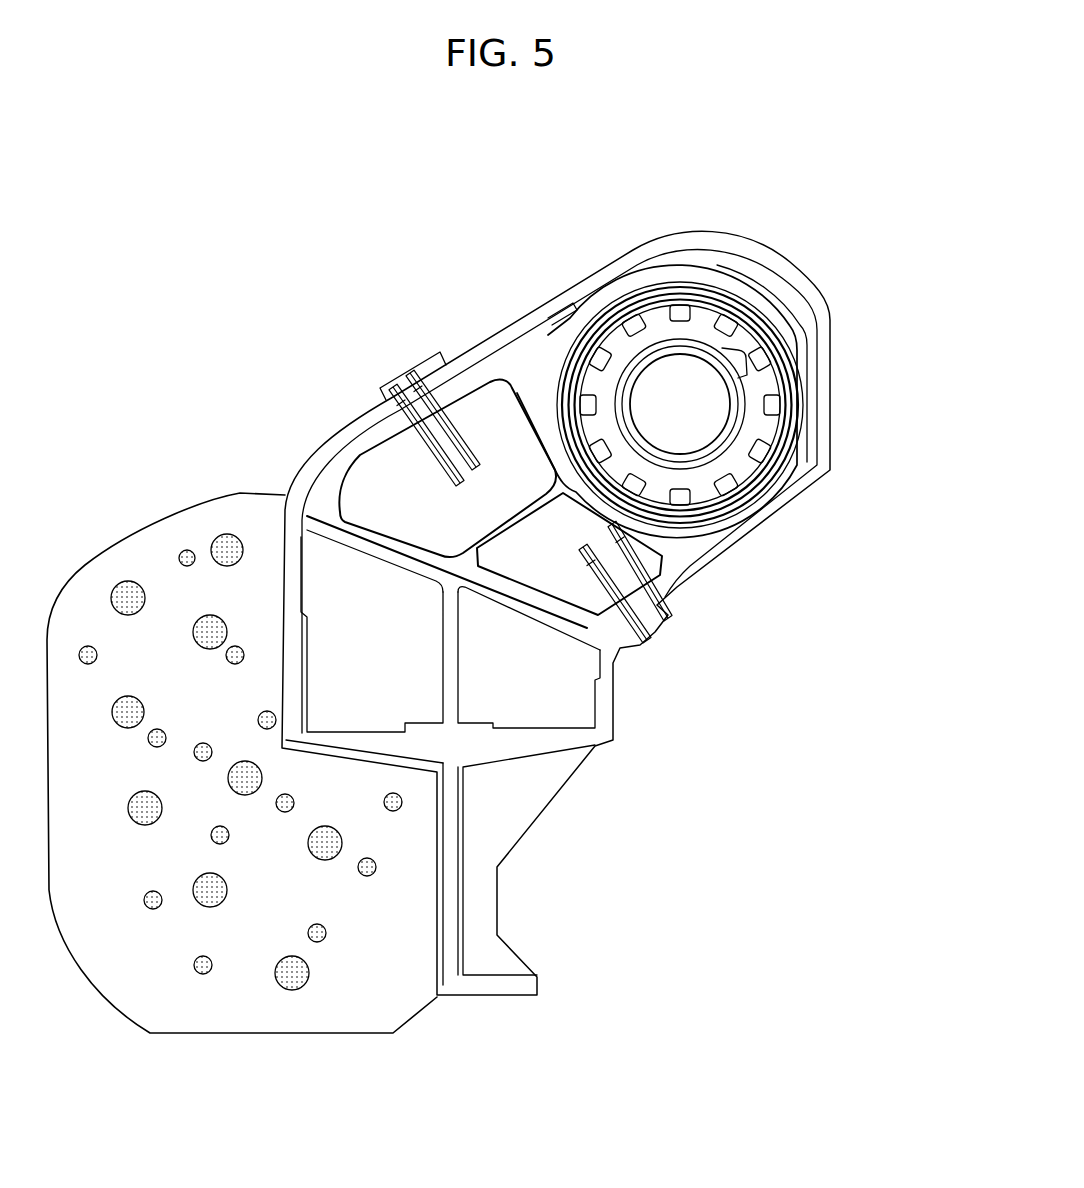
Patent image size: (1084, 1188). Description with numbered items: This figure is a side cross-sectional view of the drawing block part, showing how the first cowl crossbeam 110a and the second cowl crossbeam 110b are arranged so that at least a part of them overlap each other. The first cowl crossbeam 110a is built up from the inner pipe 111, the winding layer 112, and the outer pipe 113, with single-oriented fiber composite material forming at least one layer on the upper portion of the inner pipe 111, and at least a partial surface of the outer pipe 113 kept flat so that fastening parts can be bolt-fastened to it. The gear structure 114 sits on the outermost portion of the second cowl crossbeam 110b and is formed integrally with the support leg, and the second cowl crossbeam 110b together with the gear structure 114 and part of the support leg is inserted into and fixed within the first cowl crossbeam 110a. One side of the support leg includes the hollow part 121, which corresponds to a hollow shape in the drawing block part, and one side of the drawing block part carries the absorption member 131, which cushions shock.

The first cowl crossbeam 110a is at (946, 293).
The second cowl crossbeam 110b is at (718, 441).
The inner pipe 111 is at (722, 307).
The winding layer 112 is at (798, 340).
The outer pipe 113 is at (757, 307).
The gear structure 114 is at (614, 317).
The hollow part 121 is at (397, 484).
The absorption member 131 is at (153, 567).